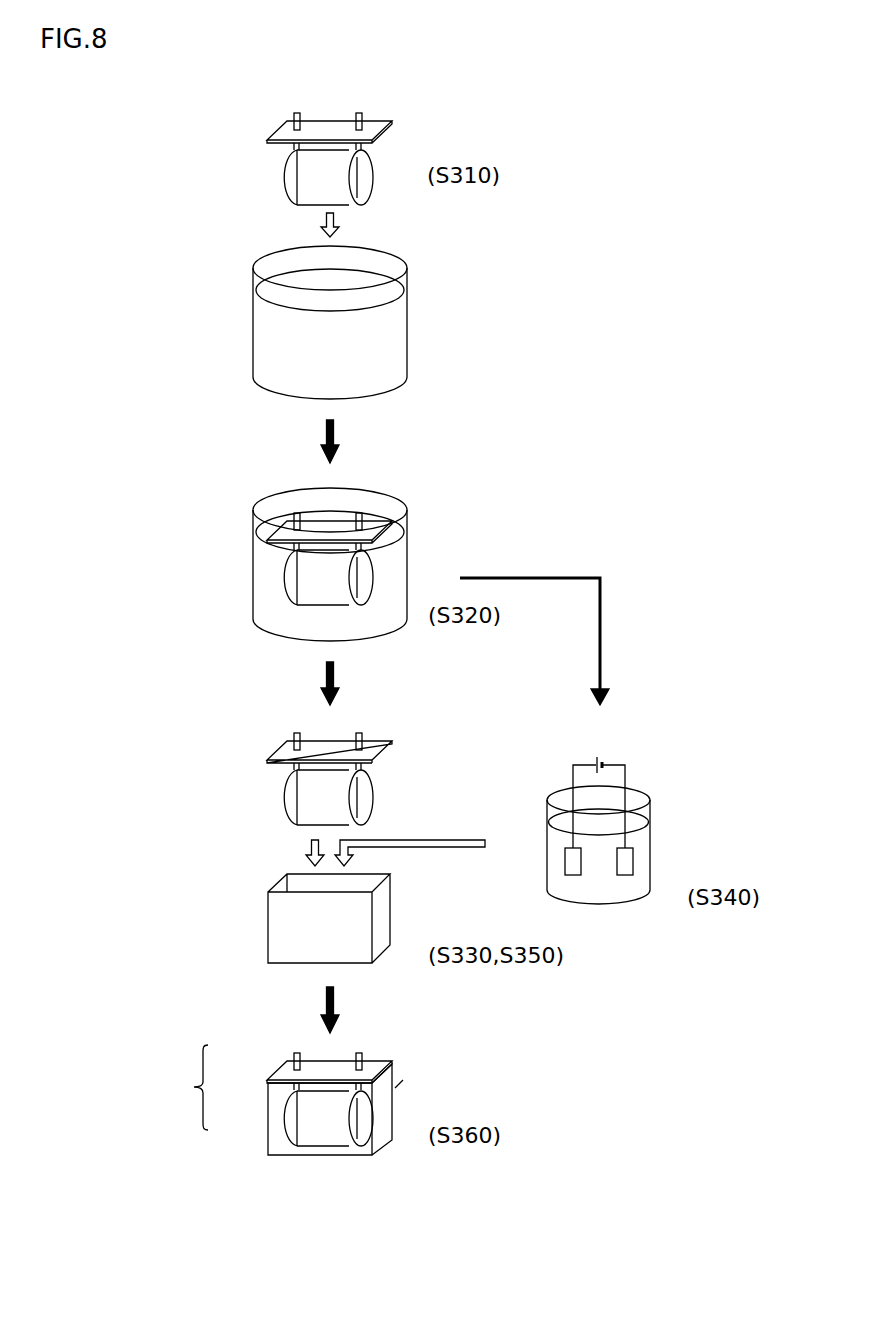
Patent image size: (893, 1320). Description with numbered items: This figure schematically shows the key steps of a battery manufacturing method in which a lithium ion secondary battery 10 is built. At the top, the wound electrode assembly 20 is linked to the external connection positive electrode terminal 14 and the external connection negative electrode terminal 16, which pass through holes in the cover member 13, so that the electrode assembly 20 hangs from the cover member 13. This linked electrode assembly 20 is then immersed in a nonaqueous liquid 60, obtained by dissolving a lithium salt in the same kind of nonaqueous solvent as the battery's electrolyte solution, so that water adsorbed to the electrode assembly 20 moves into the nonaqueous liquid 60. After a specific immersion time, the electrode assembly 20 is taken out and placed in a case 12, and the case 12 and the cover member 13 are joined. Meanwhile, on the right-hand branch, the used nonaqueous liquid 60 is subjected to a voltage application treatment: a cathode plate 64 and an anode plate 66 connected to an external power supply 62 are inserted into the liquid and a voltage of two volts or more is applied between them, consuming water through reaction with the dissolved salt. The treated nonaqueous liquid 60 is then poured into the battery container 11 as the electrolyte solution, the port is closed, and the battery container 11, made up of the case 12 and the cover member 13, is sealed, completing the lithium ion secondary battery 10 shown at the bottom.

The lithium ion secondary battery 10 is at (401, 1085).
The battery container 11 is at (185, 1087).
The case 12 is at (268, 930).
The cover member 13 is at (273, 131).
The external connection positive electrode terminal 14 is at (360, 113).
The external connection negative electrode terminal 16 is at (296, 113).
The wound electrode assembly 20 is at (283, 183).
The nonaqueous liquid 60 is at (406, 348).
The external power supply 62 is at (609, 758).
The cathode plate 64 is at (565, 857).
The anode plate 66 is at (623, 874).